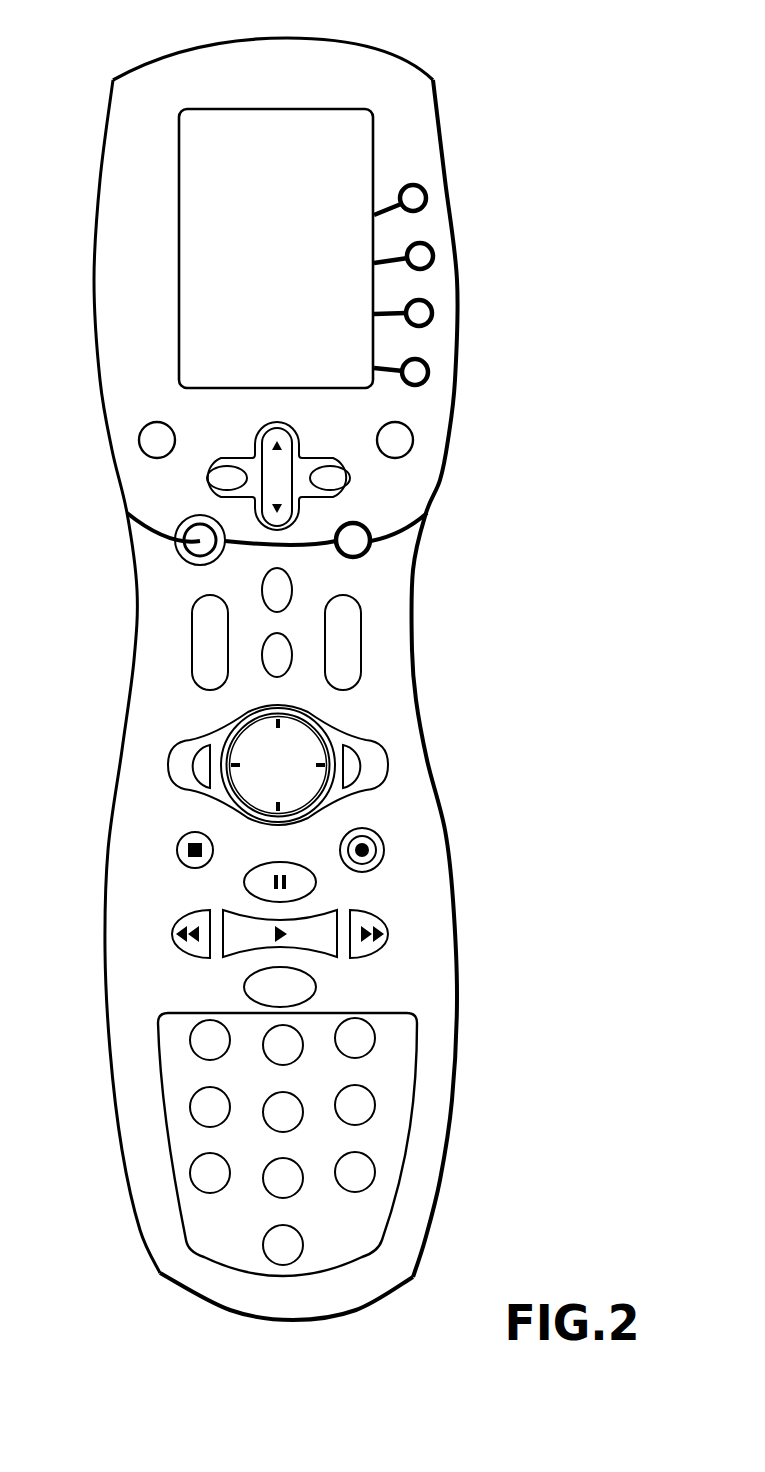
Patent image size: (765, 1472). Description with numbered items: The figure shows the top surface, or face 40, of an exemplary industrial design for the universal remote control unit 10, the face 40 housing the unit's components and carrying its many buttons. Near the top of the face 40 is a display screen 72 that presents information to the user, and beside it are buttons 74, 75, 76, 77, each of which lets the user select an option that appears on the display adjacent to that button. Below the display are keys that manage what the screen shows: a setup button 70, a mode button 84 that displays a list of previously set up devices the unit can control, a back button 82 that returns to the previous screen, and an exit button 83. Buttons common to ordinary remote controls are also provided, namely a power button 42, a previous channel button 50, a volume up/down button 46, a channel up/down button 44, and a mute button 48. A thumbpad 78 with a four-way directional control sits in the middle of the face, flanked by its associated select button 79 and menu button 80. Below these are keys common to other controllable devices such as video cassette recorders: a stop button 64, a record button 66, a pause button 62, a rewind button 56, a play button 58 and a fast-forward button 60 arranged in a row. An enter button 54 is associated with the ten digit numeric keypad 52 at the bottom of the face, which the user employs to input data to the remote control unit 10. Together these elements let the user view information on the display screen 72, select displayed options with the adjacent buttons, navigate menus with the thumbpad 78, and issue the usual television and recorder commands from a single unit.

The remote control unit 10 is at (549, 37).
The face 40 is at (115, 170).
The display screen 72 is at (314, 148).
The button 74 is at (418, 184).
The button 75 is at (428, 242).
The button 76 is at (430, 300).
The button 77 is at (427, 360).
The setup button 70 is at (138, 440).
The mode button 84 is at (413, 440).
The back button 82 is at (207, 479).
The exit button 83 is at (350, 478).
The power button 42 is at (181, 552).
The previous channel button 50 is at (292, 582).
The volume up/down button 46 is at (205, 621).
The channel up/down button 44 is at (358, 620).
The mute button 48 is at (267, 670).
The thumbpad 78 is at (300, 730).
The select button 79 is at (188, 772).
The menu button 80 is at (380, 770).
The stop button 64 is at (178, 853).
The record button 66 is at (384, 848).
The pause button 62 is at (316, 882).
The rewind button 56 is at (183, 948).
The play button 58 is at (248, 960).
The fast-forward button 60 is at (395, 932).
The enter button 54 is at (316, 987).
The numeric keypad 52 is at (413, 1058).